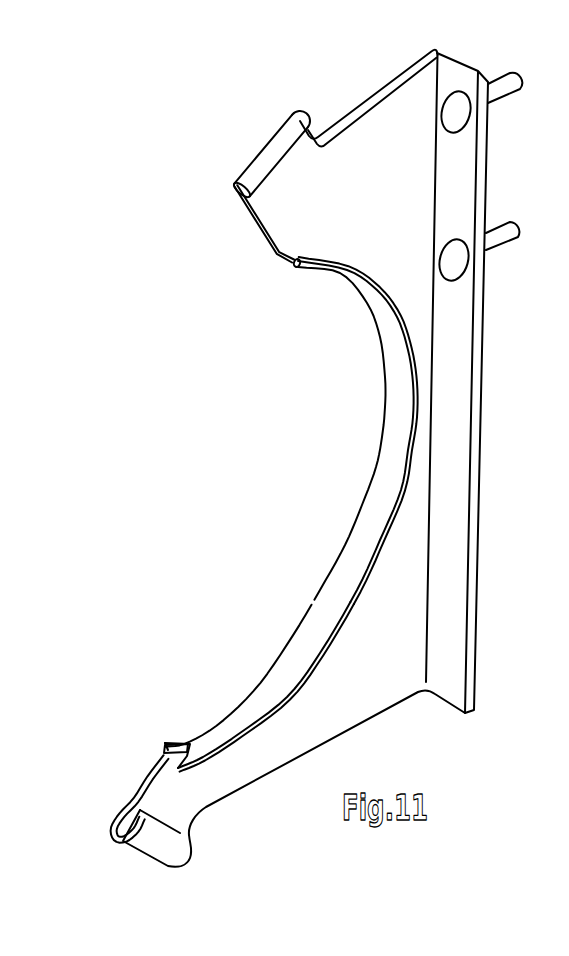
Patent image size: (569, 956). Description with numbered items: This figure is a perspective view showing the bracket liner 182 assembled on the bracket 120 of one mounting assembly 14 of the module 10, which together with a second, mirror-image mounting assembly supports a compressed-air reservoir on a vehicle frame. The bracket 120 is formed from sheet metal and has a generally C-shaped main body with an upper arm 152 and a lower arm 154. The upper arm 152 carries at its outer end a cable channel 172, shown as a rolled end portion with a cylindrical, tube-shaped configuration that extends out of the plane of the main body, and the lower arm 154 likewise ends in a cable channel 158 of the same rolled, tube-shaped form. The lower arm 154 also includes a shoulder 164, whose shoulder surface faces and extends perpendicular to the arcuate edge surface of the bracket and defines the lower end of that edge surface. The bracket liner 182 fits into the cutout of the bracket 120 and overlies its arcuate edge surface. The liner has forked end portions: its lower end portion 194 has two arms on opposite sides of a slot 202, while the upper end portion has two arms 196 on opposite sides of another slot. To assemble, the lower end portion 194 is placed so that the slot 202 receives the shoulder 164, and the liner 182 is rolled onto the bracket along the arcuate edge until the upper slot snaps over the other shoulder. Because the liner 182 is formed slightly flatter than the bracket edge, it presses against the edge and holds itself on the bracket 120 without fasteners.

The module 10 is at (237, 430).
The mounting assembly 14 is at (228, 516).
The bracket 120 is at (481, 517).
The upper arm 152 is at (363, 160).
The lower arm 154 is at (372, 687).
The cable channel 158 is at (152, 845).
The shoulder 164 is at (161, 758).
The cable channel 172 is at (277, 150).
The bracket liner 182 is at (383, 470).
The lower end portion 194 is at (210, 730).
The arms 196 is at (327, 275).
The slot 202 is at (180, 745).